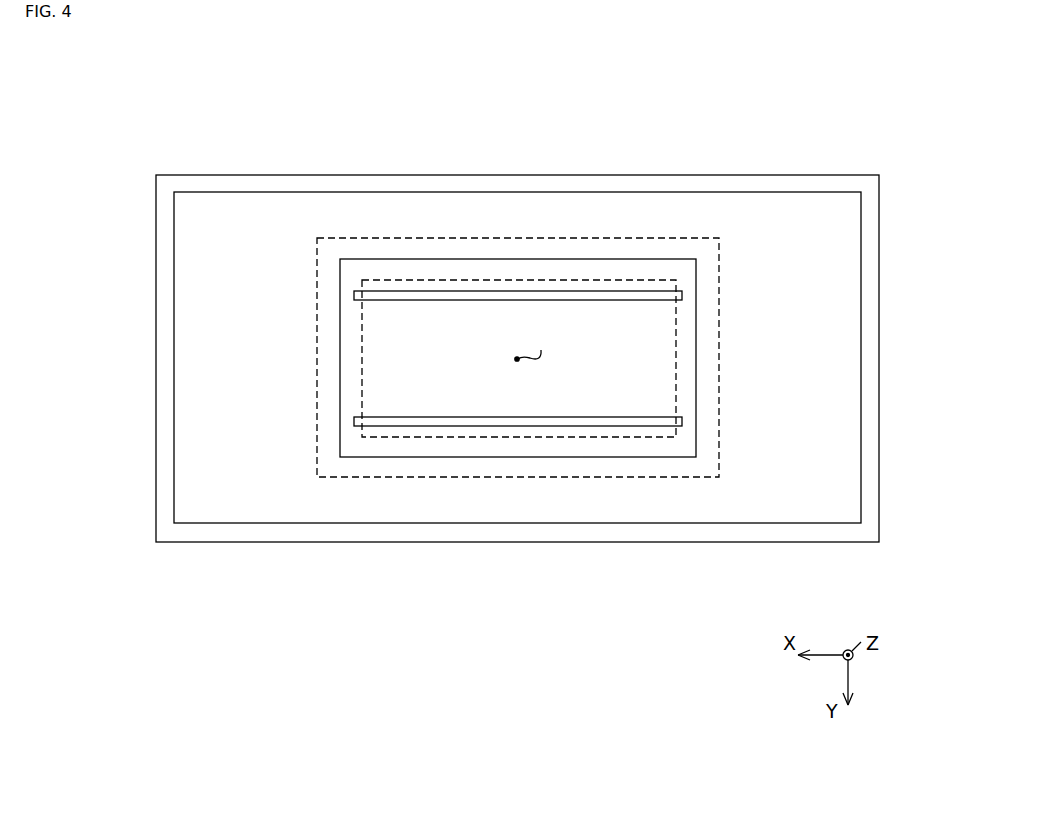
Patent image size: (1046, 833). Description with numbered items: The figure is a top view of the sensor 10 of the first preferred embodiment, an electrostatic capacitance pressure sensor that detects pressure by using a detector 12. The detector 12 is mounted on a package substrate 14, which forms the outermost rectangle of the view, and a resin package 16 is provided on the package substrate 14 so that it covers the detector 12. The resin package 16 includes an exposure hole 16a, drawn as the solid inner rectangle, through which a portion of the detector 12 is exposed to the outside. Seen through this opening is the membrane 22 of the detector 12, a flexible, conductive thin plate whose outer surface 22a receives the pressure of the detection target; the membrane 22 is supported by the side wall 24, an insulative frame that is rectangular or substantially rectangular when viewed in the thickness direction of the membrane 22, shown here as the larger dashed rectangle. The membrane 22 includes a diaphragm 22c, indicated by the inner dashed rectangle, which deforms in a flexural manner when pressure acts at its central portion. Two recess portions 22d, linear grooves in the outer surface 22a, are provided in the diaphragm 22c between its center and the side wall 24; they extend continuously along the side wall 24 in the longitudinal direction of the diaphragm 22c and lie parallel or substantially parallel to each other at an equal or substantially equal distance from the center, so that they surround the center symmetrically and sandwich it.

The sensor 10 is at (133, 197).
The detector 12 is at (718, 419).
The package substrate 14 is at (566, 180).
The resin package 16 is at (256, 369).
The exposure hole 16a is at (342, 271).
The membrane 22 is at (573, 401).
The outer surface 22a is at (561, 358).
The diaphragm 22c is at (668, 350).
The recess portions 22d is at (413, 296).
The side wall 24 is at (705, 249).